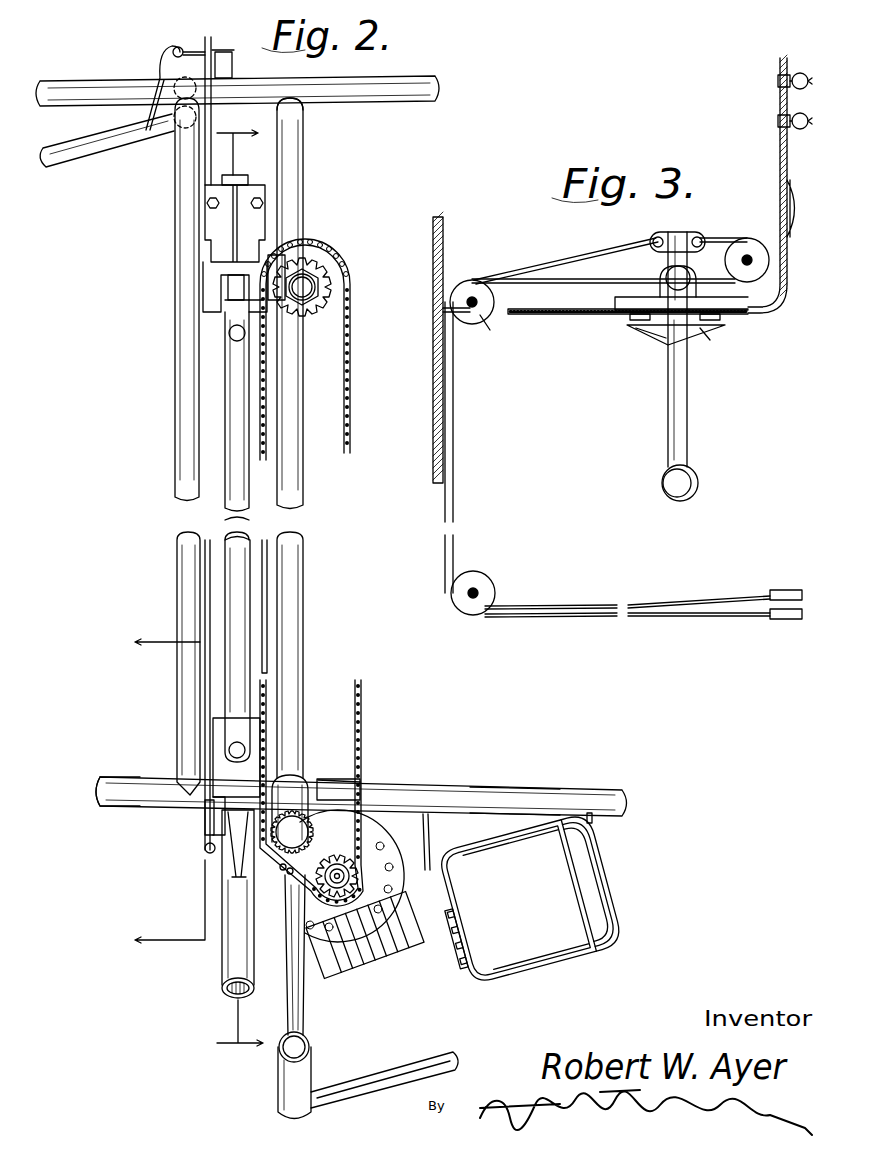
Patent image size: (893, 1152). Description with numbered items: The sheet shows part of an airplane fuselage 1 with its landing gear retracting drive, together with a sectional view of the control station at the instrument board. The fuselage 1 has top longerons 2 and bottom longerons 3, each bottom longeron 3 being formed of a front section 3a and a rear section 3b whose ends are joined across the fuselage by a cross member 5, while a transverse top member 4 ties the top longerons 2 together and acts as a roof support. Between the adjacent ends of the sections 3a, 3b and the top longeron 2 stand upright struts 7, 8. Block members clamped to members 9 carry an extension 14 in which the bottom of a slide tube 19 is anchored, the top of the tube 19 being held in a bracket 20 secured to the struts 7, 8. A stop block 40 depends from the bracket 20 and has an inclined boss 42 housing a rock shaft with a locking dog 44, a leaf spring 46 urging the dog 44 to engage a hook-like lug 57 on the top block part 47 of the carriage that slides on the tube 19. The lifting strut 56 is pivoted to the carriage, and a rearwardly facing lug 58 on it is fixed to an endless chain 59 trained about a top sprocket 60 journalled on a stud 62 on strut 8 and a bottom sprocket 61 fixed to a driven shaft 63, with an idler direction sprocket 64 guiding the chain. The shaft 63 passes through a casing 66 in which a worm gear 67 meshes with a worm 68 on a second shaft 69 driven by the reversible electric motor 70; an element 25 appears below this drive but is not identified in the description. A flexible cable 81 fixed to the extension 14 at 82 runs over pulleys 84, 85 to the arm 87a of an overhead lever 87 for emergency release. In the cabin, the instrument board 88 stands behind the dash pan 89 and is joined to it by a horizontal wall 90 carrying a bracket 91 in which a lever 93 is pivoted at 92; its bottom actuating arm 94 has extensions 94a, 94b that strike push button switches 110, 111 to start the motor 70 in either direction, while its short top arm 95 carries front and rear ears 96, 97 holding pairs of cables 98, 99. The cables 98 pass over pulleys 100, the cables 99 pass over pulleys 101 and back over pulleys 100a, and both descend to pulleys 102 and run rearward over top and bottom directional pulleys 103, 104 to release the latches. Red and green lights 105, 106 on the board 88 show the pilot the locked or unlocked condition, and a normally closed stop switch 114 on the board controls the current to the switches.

In FIG. 2, the airplane fuselage 1 is at (305, 112).
In FIG. 2, the top longerons 2 is at (437, 88).
In FIG. 2, the bottom longerons 3 is at (618, 787).
In FIG. 2, the front section of bottom longeron 3a is at (92, 792).
In FIG. 2, the rear section of bottom longeron 3b is at (510, 790).
In FIG. 2, the transverse top member 4 is at (170, 791).
In FIG. 2, the cross member 5 is at (240, 591).
In FIG. 2, the upright strut 7 is at (175, 390).
In FIG. 2, the upright strut 8 is at (303, 490).
In FIG. 2, the members 9 is at (296, 796).
In FIG. 2, the extension 14 is at (205, 880).
In FIG. 2, the tube 19 is at (228, 528).
In FIG. 2, the bracket 20 is at (252, 182).
In FIG. 2, the socket 25 is at (278, 1088).
In FIG. 2, the stop block 40 is at (220, 270).
In FIG. 2, the inclined boss 42 is at (226, 303).
In FIG. 2, the locking dog 44 is at (232, 308).
In FIG. 2, the leaf spring 46 is at (282, 270).
In FIG. 2, the top block part 47 is at (213, 722).
In FIG. 2, the lifting or retracting strut 56 is at (222, 988).
In FIG. 2, the hook-like lug 57 is at (235, 742).
In FIG. 2, the rearwardly facing lug 58 is at (268, 753).
In FIG. 2, the endless chain 59 is at (268, 733).
In FIG. 2, the top sprocket 60 is at (330, 290).
In FIG. 2, the bottom sprocket 61 is at (322, 880).
In FIG. 2, the stud 62 is at (316, 283).
In FIG. 2, the driven shaft 63 is at (358, 800).
In FIG. 2, the idler direction sprocket 64 is at (281, 868).
In FIG. 2, the casing 66 is at (300, 882).
In FIG. 2, the worm gear 67 is at (302, 890).
In FIG. 2, the worm 68 is at (368, 968).
In FIG. 2, the second shaft 69 is at (398, 950).
In FIG. 2, the electric motor 70 is at (480, 980).
In FIG. 2, the flexible cable 81 is at (205, 826).
In FIG. 2, the cable fixing point 82 is at (205, 849).
In FIG. 2, the pulley 84 is at (212, 40).
In FIG. 2, the pulley 85 is at (233, 55).
In FIG. 2, the lever 87 is at (124, 125).
In FIG. 2, the arm 87a is at (158, 74).
In FIG. 3, the instrument board 88 is at (780, 157).
In FIG. 3, the dash pan 89 is at (433, 340).
In FIG. 3, the horizontal wall 90 is at (628, 322).
In FIG. 3, the bracket 91 is at (660, 330).
In FIG. 3, the pivot 92 is at (664, 276).
In FIG. 3, the lever 93 is at (689, 424).
In FIG. 3, the bottom actuating arm 94 is at (668, 462).
In FIG. 3, the extension 94a is at (652, 330).
In FIG. 3, the extension 94b is at (712, 330).
In FIG. 3, the top arm 95 is at (680, 238).
In FIG. 3, the front ears 96 is at (656, 236).
In FIG. 3, the rear ears 97 is at (702, 236).
In FIG. 3, the cables 98 is at (584, 256).
In FIG. 3, the cables 99 is at (708, 603).
In FIG. 3, the pulleys 100 is at (468, 290).
In FIG. 3, the pulleys 100a is at (488, 322).
In FIG. 3, the pulleys 101 is at (752, 248).
In FIG. 3, the set of pulleys 102 is at (487, 585).
In FIG. 3, the top directional pulleys 103 is at (780, 590).
In FIG. 3, the bottom directional pulleys 104 is at (778, 620).
In FIG. 3, the red electric lights 105 is at (778, 86).
In FIG. 3, the green electric lights 106 is at (778, 125).
In FIG. 3, the manually operable switch 110 is at (618, 312).
In FIG. 3, the manually controlled switch 111 is at (715, 327).
In FIG. 3, the push button stop switch 114 is at (795, 222).